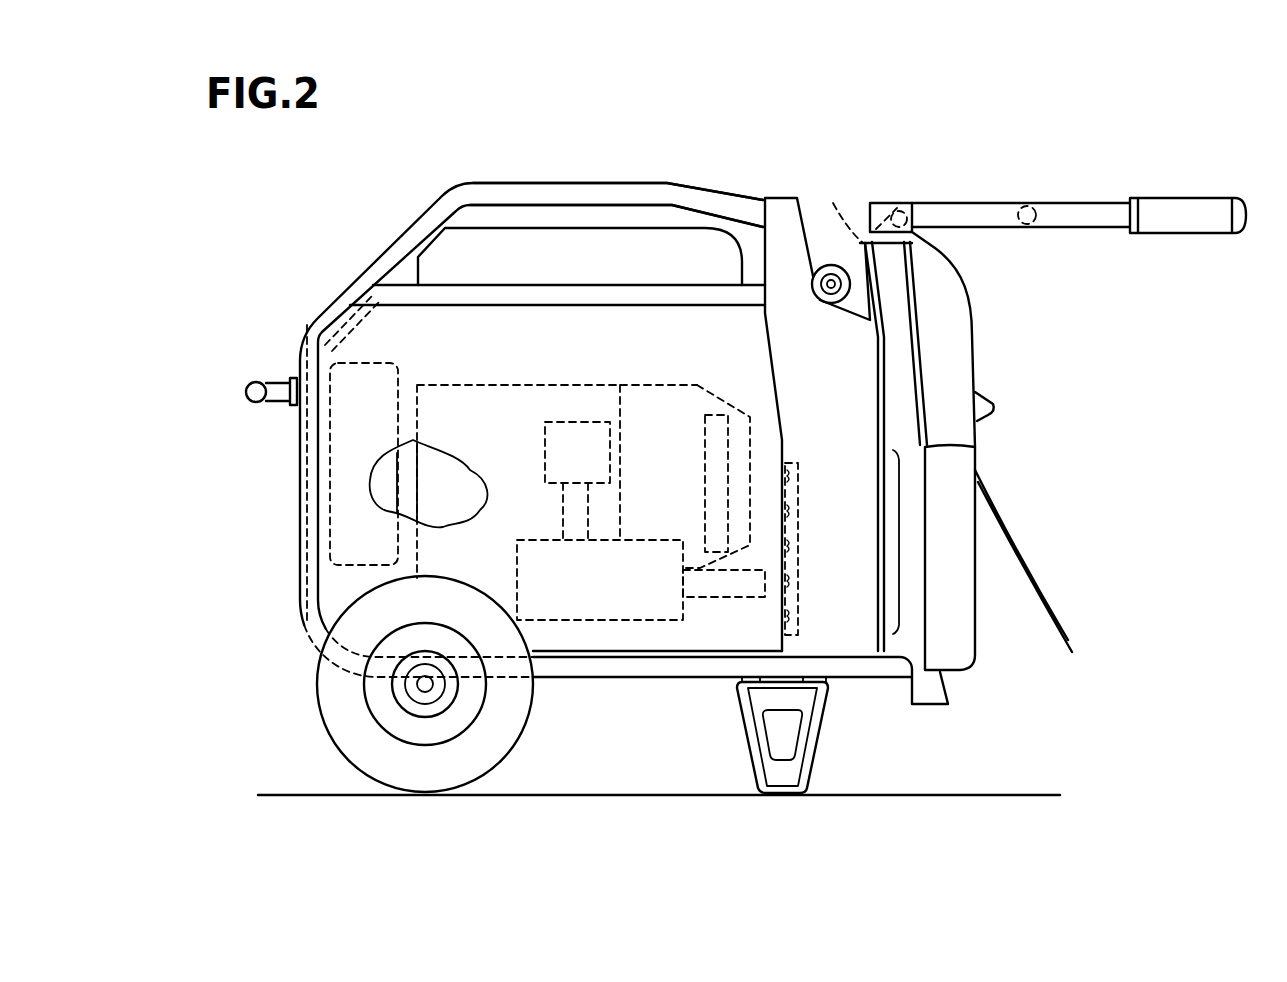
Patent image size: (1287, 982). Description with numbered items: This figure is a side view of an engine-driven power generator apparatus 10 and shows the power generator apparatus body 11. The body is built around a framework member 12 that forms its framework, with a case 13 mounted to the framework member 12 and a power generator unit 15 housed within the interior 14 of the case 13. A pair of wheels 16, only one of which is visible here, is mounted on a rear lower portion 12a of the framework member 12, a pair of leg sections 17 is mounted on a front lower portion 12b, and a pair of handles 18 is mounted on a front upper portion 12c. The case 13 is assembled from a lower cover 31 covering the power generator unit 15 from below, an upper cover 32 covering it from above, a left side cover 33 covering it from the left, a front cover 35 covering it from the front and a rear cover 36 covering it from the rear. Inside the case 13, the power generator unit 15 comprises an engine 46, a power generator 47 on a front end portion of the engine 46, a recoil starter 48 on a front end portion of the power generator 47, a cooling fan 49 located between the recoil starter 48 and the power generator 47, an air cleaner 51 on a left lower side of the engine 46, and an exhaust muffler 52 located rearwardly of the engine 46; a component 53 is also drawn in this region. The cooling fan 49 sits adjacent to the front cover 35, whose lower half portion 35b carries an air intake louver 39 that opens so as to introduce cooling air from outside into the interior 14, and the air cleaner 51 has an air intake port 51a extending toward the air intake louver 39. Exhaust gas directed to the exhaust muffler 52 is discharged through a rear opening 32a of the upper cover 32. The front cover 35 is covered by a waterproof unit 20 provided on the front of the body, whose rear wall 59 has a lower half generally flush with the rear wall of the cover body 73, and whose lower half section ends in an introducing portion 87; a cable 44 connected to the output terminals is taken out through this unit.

The handle assembly 10 is at (943, 383).
The power generator apparatus body 11 is at (637, 225).
The framework member 12 is at (529, 439).
The rear lower portion 12a is at (382, 680).
The front lower portion 12b is at (790, 668).
The front upper portion 12c is at (780, 212).
The case 13 is at (553, 419).
The interior 14 is at (425, 499).
The power generator unit 15 is at (640, 490).
The wheels 16 is at (379, 717).
The leg sections 17 is at (815, 763).
The handles 18 is at (1085, 207).
The waterproof unit 20 is at (967, 282).
The lower cover 31 is at (670, 657).
The upper cover 32 is at (553, 232).
The rear opening 32a is at (337, 327).
The left side cover 33 is at (357, 583).
The front cover 35 is at (965, 441).
The lower half portion 35b is at (905, 540).
The rear cover 36 is at (307, 433).
The air intake louver 39 is at (798, 530).
The cable 44 is at (1035, 580).
The engine 46 is at (468, 393).
The power generator 47 is at (657, 395).
The recoil starter 48 is at (750, 437).
The cooling fan 49 is at (717, 422).
The air cleaner 51 is at (603, 622).
The air intake port 51a is at (737, 590).
The exhaust muffler 52 is at (337, 395).
The air cleaner 53 is at (568, 428).
The rear wall 59 is at (977, 600).
The cover body 73 is at (977, 400).
The introducing portion 87 is at (952, 690).